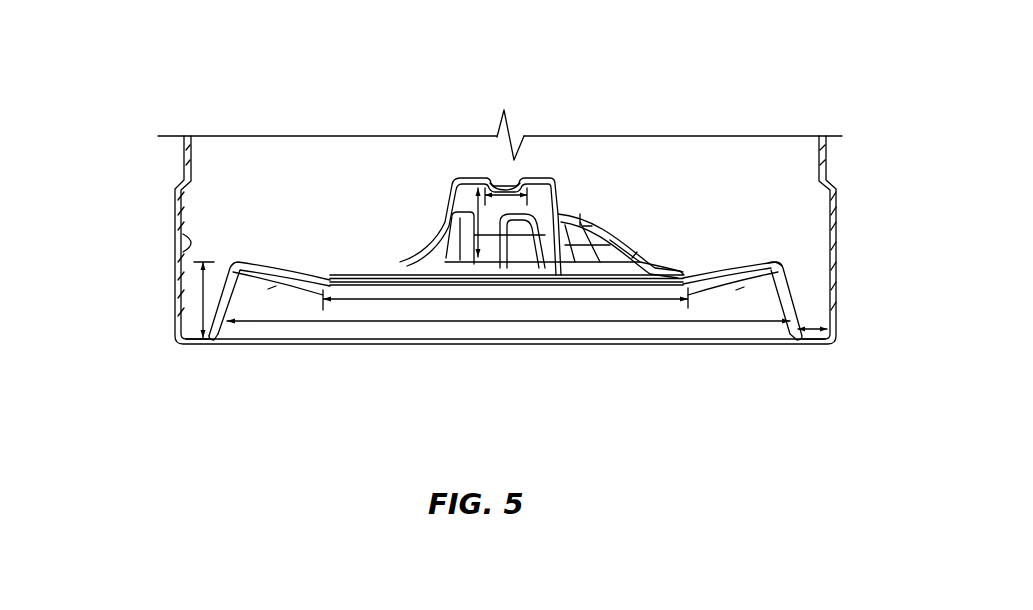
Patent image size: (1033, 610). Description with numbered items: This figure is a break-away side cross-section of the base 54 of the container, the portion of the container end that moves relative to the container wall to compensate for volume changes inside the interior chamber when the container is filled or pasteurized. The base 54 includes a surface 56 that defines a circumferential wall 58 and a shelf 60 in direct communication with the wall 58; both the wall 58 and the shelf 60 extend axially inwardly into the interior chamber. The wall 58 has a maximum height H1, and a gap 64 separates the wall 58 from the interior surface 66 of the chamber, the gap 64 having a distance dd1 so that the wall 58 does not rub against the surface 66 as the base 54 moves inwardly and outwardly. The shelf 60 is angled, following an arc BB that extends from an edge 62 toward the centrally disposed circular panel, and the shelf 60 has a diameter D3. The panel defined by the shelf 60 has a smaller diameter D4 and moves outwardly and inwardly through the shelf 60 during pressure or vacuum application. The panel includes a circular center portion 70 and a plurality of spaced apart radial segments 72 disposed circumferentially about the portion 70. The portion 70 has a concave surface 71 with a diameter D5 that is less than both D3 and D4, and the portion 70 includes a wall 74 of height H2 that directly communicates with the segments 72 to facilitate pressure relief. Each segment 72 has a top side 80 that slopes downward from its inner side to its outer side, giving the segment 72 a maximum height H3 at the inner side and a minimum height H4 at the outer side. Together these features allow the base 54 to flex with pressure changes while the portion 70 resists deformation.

The base 54 is at (97, 175).
The surface 56 is at (730, 277).
The circumferential wall 58 is at (790, 292).
The shelf 60 is at (290, 275).
The edge 62 is at (765, 258).
The gap 64 is at (197, 320).
The interior surface 66 is at (180, 255).
The circular center portion 70 is at (472, 178).
The surface 71 is at (503, 183).
The radial segments 72 is at (622, 227).
The wall 74 is at (452, 193).
The top side 80 is at (588, 217).
The maximum height H1 is at (203, 293).
The height H2 is at (463, 200).
The maximum height H3 is at (580, 222).
The minimum height H4 is at (637, 252).
The diameter D3 is at (427, 322).
The diameter D4 is at (442, 299).
The diameter D5 is at (513, 183).
The gap distance dd1 is at (818, 322).
The arc BB is at (272, 287).